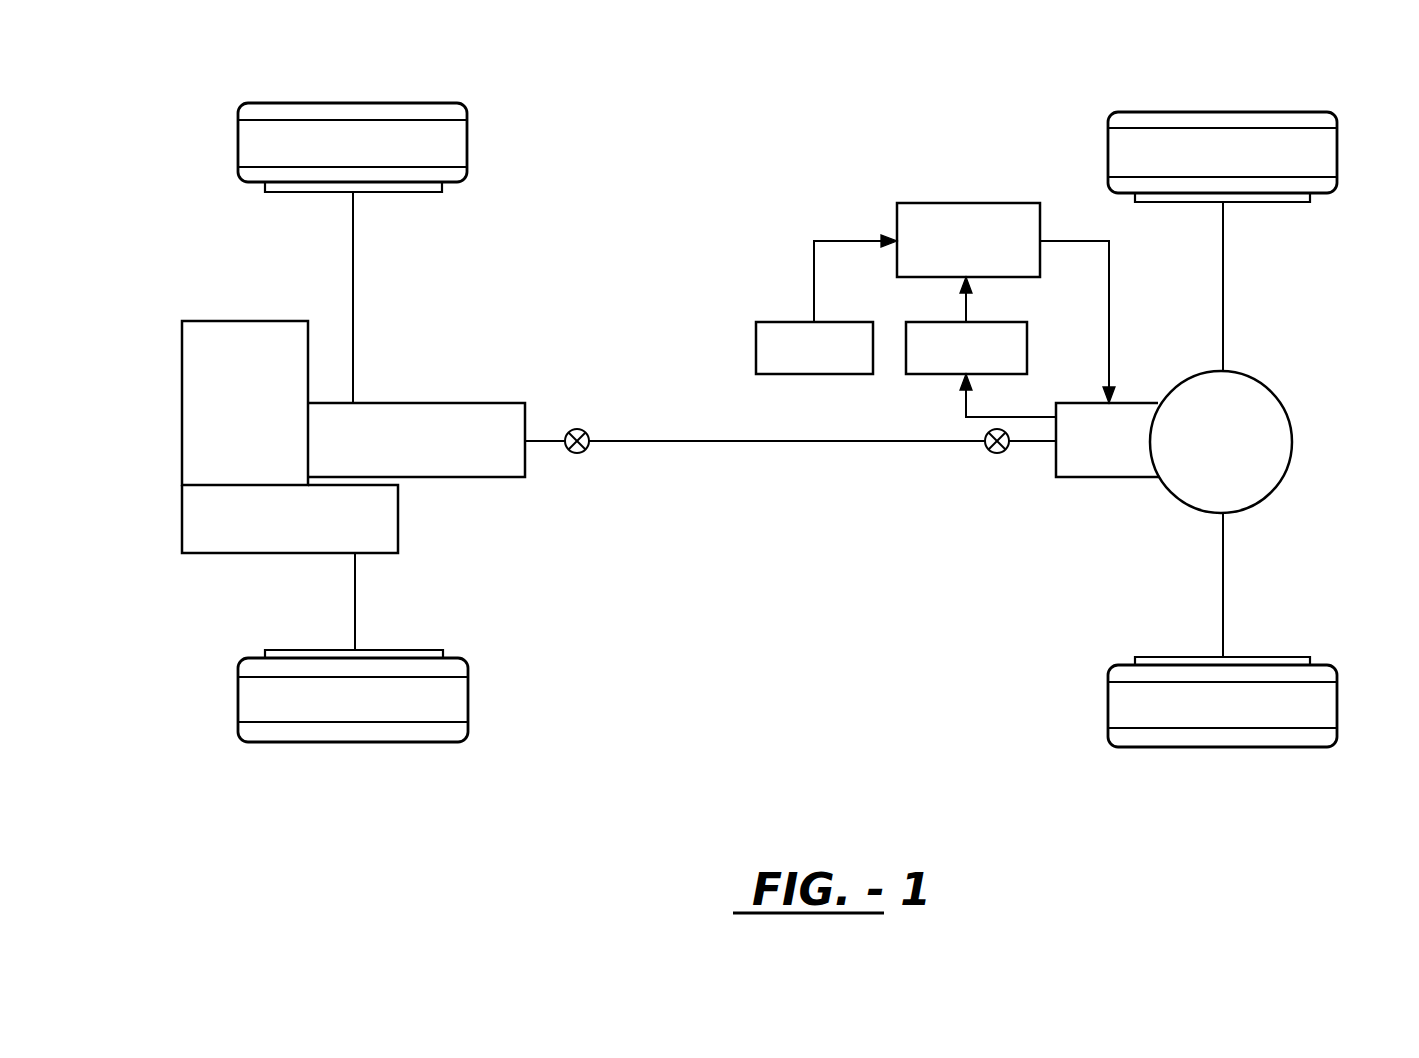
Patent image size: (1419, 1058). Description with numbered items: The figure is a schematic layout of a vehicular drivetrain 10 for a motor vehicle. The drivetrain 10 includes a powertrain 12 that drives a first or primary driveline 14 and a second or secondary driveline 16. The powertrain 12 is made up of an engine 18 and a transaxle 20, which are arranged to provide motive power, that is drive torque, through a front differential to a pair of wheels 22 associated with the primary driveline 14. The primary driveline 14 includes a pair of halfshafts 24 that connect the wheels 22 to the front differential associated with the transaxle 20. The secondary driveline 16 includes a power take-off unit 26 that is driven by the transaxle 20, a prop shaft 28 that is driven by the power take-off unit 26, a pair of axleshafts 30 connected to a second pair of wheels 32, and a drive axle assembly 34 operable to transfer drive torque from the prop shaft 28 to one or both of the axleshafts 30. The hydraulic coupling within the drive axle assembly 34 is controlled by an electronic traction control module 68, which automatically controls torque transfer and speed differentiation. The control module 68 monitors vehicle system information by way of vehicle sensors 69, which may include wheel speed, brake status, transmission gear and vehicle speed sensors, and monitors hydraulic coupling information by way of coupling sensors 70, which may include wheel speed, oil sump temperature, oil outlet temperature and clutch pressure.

The vehicular drivetrain 10 is at (764, 167).
The powertrain 12 is at (260, 497).
The primary driveline 14 is at (425, 356).
The secondary driveline 16 is at (1140, 479).
The engine 18 is at (245, 403).
The transaxle 20 is at (290, 519).
The wheels 22 is at (450, 142).
The halfshafts 24 is at (353, 238).
The power take-off unit 26 is at (432, 403).
The prop shaft 28 is at (740, 441).
The axleshafts 30 is at (1223, 272).
The wheels 32 is at (1308, 145).
The drive axle assembly 34 is at (1257, 465).
The electronic traction control module 68 is at (963, 203).
The vehicle sensors 69 is at (756, 350).
The coupling sensors 70 is at (1027, 352).